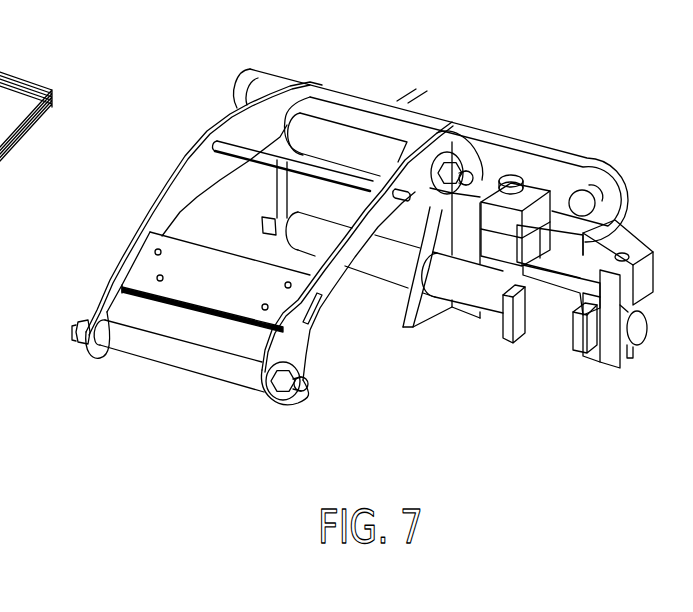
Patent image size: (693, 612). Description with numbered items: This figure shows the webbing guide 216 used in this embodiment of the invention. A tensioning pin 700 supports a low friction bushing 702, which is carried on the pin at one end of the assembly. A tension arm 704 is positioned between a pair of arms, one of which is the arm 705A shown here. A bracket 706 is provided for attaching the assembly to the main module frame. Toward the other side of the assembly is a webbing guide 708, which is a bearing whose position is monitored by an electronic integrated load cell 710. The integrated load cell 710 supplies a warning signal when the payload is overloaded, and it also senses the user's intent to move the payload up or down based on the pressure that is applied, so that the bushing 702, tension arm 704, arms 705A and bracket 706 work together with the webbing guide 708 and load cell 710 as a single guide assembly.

The webbing guide 216 is at (462, 68).
The tensioning pin 700 is at (77, 333).
The low friction bushing 702 is at (182, 360).
The tension arm 704 is at (173, 253).
The arm 705A is at (190, 143).
The bracket 706 is at (540, 136).
The webbing guide 708 is at (386, 273).
The integrated load cell 710 is at (333, 128).